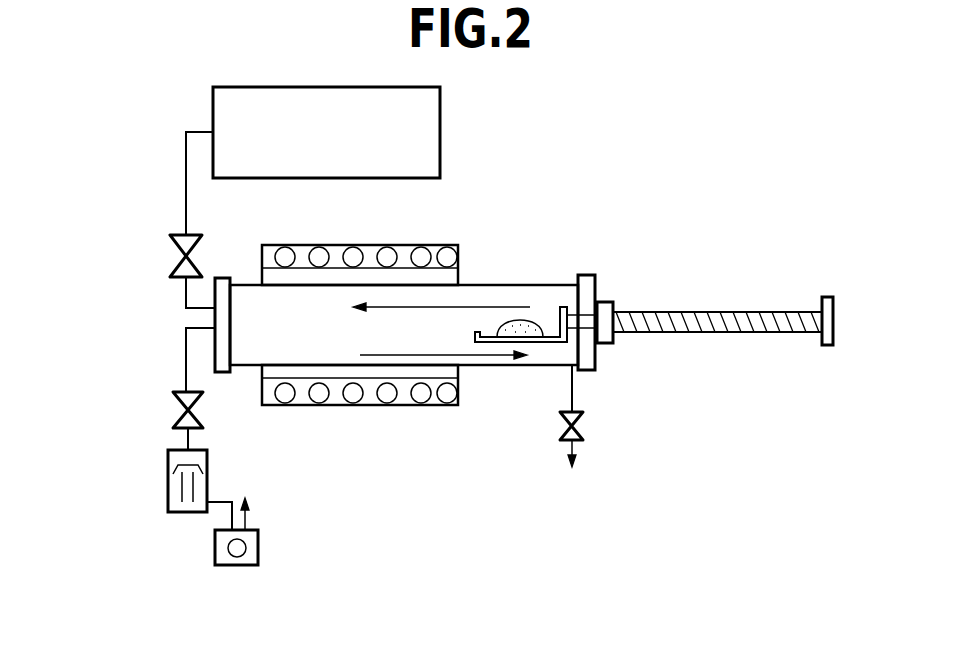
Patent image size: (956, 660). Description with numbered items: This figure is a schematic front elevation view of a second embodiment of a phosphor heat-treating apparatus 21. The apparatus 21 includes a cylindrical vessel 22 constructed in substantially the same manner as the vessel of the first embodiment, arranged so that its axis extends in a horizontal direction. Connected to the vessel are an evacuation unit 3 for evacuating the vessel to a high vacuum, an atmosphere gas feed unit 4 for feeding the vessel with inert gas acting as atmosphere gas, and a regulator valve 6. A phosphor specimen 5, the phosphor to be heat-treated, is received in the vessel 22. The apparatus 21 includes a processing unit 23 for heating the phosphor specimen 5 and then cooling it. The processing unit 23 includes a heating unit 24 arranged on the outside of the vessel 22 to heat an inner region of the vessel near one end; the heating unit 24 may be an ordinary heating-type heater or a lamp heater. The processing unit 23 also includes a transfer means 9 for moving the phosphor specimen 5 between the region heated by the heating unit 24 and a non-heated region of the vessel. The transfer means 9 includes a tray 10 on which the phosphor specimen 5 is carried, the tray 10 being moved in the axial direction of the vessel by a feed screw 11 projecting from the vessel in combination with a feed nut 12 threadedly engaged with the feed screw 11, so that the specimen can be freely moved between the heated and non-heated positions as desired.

The evacuation unit 3 is at (168, 458).
The atmosphere gas feed unit 4 is at (440, 110).
The phosphor specimen 5 is at (530, 320).
The regulator valve 6 is at (560, 432).
The transfer means 9 is at (750, 500).
The tray 10 is at (540, 342).
The feed screw 11 is at (725, 333).
The feed nut 12 is at (606, 345).
The phosphor heat-treating apparatus 21 is at (153, 213).
The cylindrical vessel 22 is at (565, 285).
The processing unit 23 is at (682, 545).
The heating unit 24 is at (405, 404).